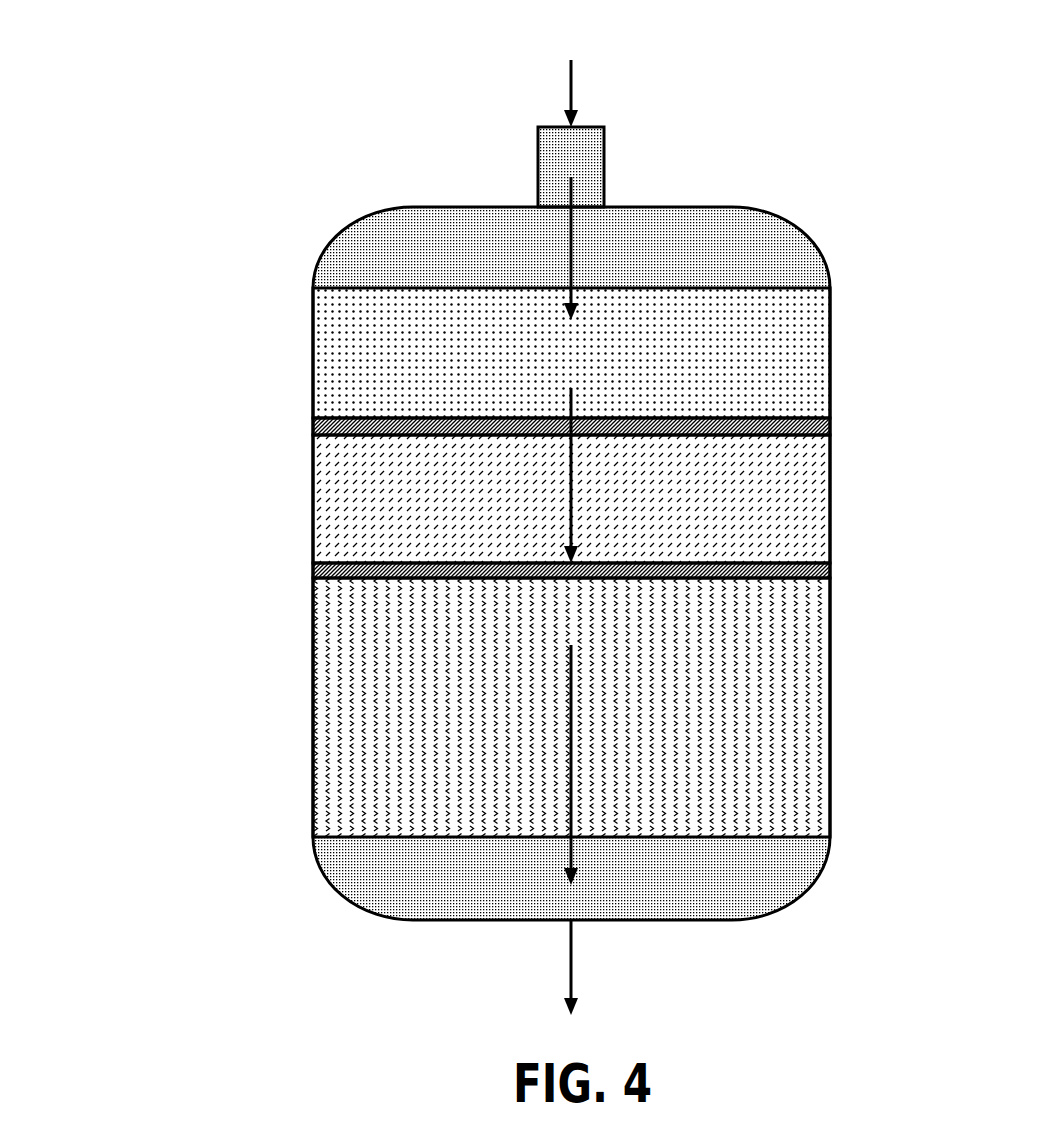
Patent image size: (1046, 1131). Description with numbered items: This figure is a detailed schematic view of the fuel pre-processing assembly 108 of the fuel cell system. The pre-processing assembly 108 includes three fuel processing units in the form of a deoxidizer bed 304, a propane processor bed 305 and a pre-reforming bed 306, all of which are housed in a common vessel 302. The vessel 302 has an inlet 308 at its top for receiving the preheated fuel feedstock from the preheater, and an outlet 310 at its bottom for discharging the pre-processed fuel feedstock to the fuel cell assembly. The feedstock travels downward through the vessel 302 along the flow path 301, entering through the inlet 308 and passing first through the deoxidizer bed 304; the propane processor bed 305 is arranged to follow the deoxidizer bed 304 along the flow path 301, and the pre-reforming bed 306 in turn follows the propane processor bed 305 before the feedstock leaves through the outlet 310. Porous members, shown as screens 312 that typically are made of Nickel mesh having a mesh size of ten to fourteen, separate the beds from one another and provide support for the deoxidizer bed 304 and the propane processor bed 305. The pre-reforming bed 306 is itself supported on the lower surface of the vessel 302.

The pre-processing assembly 108 is at (212, 180).
The flow path 301 is at (567, 449).
The vessel 302 is at (611, 563).
The deoxidizer bed 304 is at (529, 353).
The propane processor bed 305 is at (619, 499).
The pre-reforming bed 306 is at (623, 707).
The inlet 308 is at (616, 158).
The outlet 310 is at (514, 964).
The screens 312 is at (526, 517).